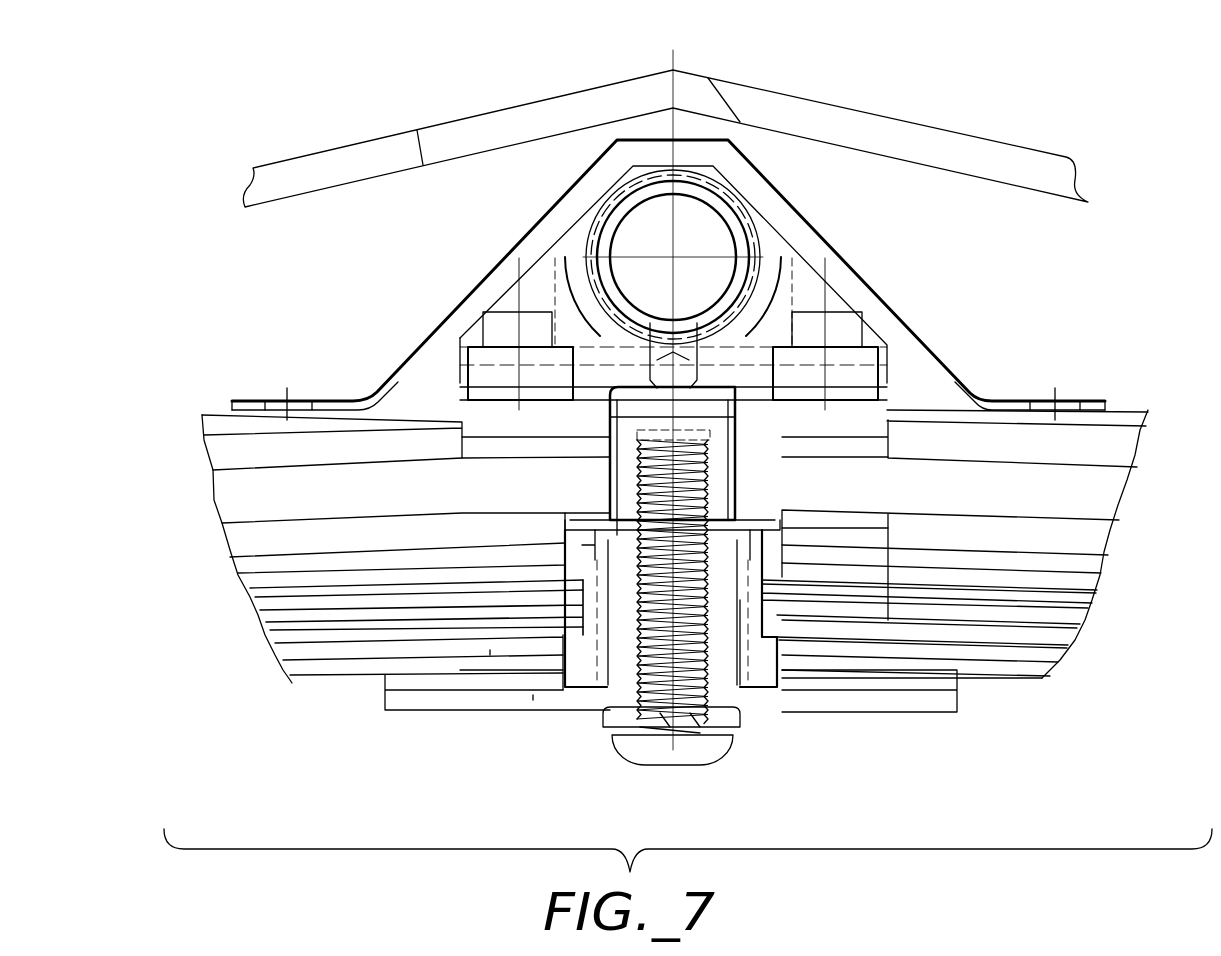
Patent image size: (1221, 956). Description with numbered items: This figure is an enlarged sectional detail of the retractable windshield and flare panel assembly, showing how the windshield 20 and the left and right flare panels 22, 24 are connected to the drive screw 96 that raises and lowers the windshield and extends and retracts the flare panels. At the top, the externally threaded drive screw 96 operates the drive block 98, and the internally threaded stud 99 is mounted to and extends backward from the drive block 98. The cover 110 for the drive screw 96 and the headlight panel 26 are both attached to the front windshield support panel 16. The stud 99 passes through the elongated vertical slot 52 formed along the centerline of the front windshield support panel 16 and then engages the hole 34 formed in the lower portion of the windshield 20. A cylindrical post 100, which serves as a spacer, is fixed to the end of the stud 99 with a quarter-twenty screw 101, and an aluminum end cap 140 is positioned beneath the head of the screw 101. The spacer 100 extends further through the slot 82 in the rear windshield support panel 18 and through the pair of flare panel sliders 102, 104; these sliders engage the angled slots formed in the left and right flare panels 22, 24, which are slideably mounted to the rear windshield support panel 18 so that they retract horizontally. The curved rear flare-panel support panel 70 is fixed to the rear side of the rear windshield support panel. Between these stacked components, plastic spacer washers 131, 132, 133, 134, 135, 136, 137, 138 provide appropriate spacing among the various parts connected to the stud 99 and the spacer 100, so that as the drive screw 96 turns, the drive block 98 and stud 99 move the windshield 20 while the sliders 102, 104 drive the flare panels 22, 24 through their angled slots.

The front windshield support panel 16 is at (1130, 425).
The rear windshield support panel 18 is at (1100, 562).
The windshield 20 is at (1105, 497).
The left flare panel 22 is at (262, 600).
The right flare panel 24 is at (277, 634).
The headlight panel 26 is at (866, 113).
The hole 34 is at (617, 507).
The elongated vertical slot 52 is at (570, 404).
The rear flare-panel support panel 70 is at (1050, 666).
The slot 82 is at (758, 553).
The drive screw 96 is at (645, 238).
The drive block 98 is at (830, 312).
The internally threaded stud 99 is at (740, 496).
The cylindrical post 100 is at (622, 675).
The screw 101 is at (732, 760).
The flare panel slider 102 is at (752, 675).
The flare panel slider 104 is at (742, 688).
The cover 110 is at (882, 296).
The plastic spacer washer 131 is at (462, 428).
The plastic spacer washer 132 is at (462, 452).
The plastic spacer washer 133 is at (465, 515).
The plastic spacer washer 134 is at (465, 538).
The plastic spacer washer 135 is at (470, 573).
The plastic spacer washer 136 is at (470, 610).
The plastic spacer washer 137 is at (490, 650).
The plastic spacer washer 138 is at (385, 690).
The aluminum end cap 140 is at (533, 700).